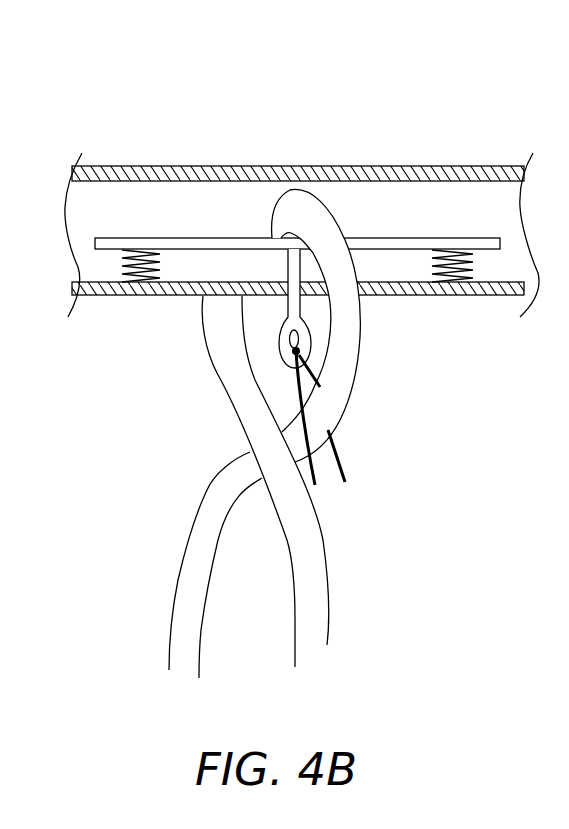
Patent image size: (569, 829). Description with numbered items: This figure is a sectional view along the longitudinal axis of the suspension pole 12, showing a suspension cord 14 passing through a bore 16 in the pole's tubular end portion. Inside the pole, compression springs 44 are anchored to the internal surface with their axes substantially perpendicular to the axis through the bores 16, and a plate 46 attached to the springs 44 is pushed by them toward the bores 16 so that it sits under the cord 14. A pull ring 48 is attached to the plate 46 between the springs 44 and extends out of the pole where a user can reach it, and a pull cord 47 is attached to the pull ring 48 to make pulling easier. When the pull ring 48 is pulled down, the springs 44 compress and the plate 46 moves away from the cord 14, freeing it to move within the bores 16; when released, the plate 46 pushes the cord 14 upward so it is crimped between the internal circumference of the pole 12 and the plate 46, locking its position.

The suspension pole 12 is at (440, 177).
The suspension cord 14 is at (328, 238).
The bore 16 is at (285, 184).
The compression spring 44 is at (147, 271).
The plate 46 is at (170, 238).
The pull cord 47 is at (340, 447).
The pull ring 48 is at (292, 267).